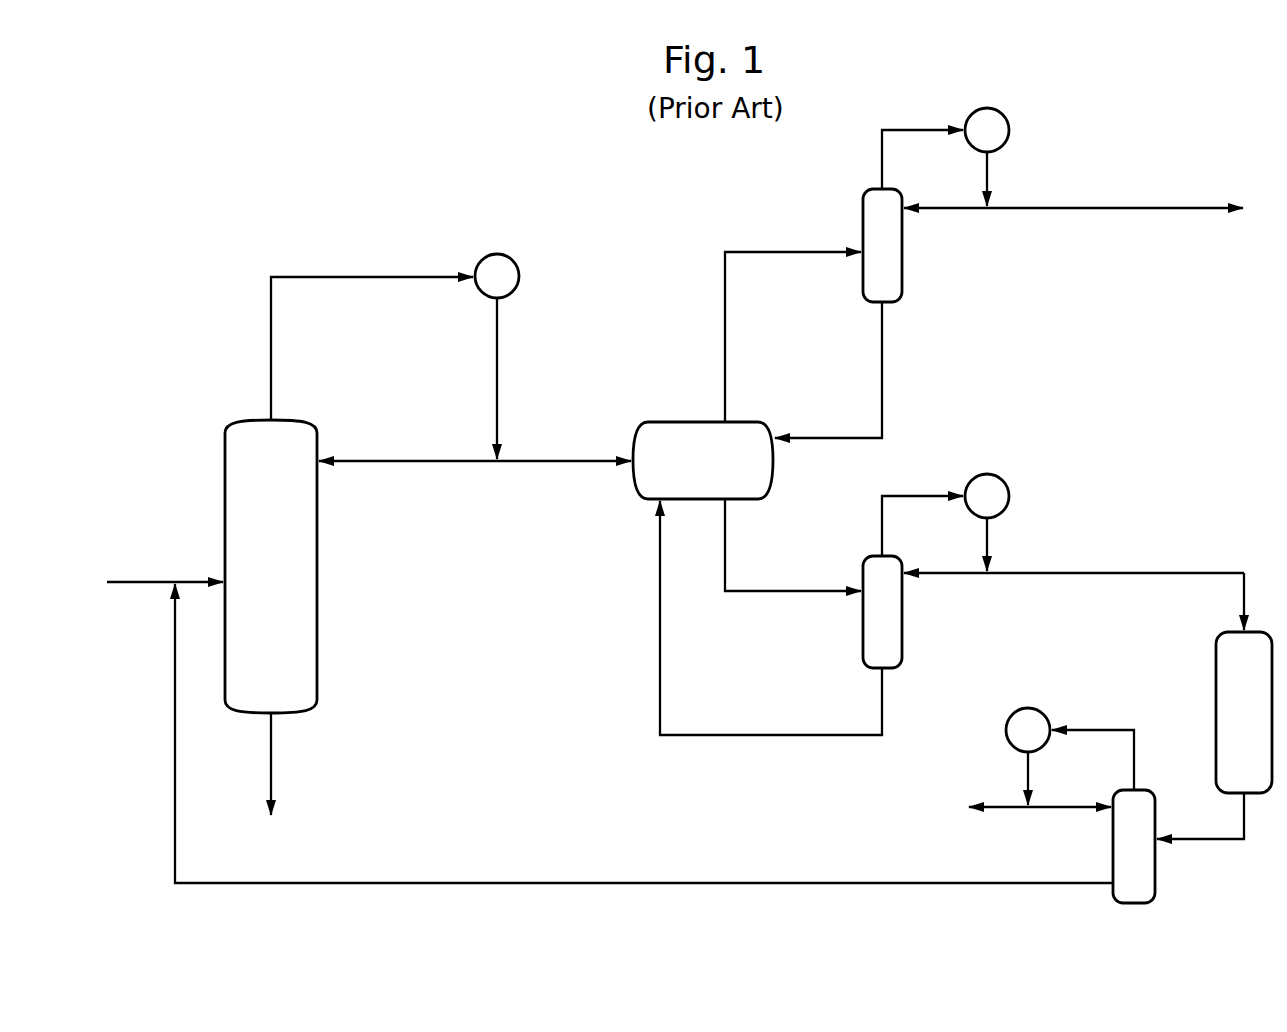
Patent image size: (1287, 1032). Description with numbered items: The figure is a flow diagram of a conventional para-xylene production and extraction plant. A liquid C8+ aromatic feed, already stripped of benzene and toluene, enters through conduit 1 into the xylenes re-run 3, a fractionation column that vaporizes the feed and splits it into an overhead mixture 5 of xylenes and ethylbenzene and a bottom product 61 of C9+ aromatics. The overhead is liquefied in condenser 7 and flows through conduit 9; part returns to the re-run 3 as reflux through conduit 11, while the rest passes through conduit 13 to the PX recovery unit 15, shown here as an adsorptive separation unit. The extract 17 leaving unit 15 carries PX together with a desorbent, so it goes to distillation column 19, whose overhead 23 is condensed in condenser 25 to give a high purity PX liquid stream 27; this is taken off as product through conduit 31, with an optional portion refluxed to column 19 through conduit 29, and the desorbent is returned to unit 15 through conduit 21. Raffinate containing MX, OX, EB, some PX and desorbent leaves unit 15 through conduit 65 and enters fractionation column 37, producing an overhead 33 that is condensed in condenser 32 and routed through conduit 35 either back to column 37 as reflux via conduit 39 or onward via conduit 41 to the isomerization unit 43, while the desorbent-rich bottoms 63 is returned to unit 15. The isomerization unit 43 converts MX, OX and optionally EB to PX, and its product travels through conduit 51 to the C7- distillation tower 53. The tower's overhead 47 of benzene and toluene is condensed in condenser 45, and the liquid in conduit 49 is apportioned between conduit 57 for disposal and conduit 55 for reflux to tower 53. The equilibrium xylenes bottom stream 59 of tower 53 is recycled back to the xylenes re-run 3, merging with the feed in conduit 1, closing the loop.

The conduit 1 is at (142, 582).
The xylenes re-run 3 is at (260, 575).
The overhead mixture 5 is at (271, 342).
The condenser 7 is at (520, 272).
The conduit 9 is at (497, 355).
The conduit 11 is at (405, 461).
The conduit 13 is at (535, 461).
The PX recovery unit 15 is at (688, 473).
The extract 17 is at (725, 345).
The distillation column 19 is at (902, 275).
The conduit 21 is at (882, 380).
The overhead 23 is at (882, 157).
The condenser 25 is at (1010, 126).
The liquid stream 27 is at (987, 168).
The conduit 29 is at (960, 208).
The conduit 31 is at (1180, 208).
The condenser 32 is at (1010, 492).
The overhead 33 is at (882, 523).
The conduit 35 is at (987, 533).
The fractionation column 37 is at (902, 640).
The conduit 39 is at (960, 573).
The conduit 41 is at (1180, 573).
The isomerization unit 43 is at (1229, 728).
The condenser 45 is at (1007, 729).
The overhead 47 is at (1100, 730).
The conduit 49 is at (1028, 770).
The conduit 51 is at (1210, 839).
The C7- distillation tower 53 is at (1155, 880).
The conduit 55 is at (1065, 807).
The conduit 57 is at (1003, 807).
The bottom stream 59 is at (450, 883).
The bottom product 61 is at (271, 760).
The bottoms 63 is at (660, 637).
The conduit 65 is at (752, 591).